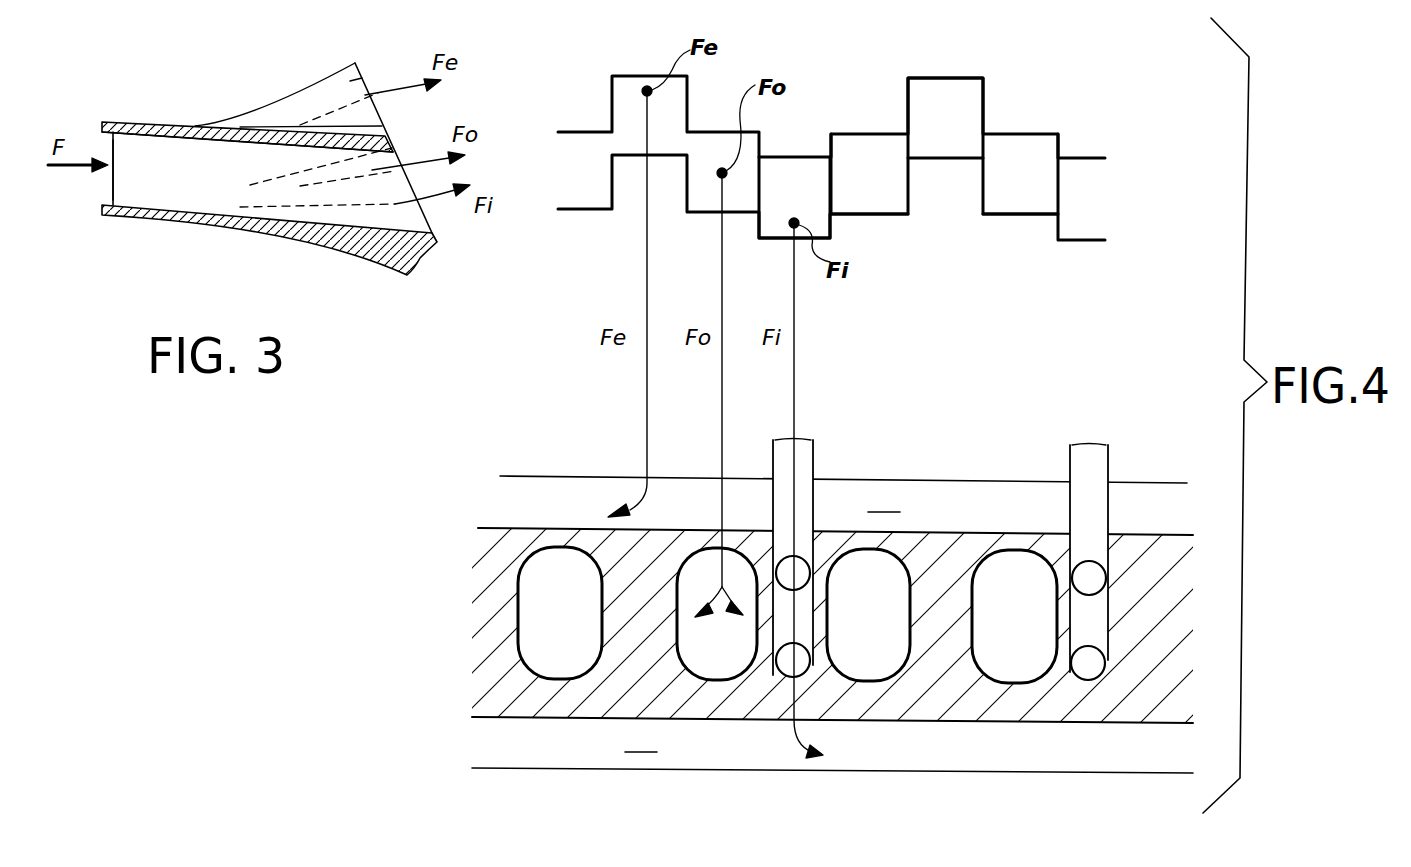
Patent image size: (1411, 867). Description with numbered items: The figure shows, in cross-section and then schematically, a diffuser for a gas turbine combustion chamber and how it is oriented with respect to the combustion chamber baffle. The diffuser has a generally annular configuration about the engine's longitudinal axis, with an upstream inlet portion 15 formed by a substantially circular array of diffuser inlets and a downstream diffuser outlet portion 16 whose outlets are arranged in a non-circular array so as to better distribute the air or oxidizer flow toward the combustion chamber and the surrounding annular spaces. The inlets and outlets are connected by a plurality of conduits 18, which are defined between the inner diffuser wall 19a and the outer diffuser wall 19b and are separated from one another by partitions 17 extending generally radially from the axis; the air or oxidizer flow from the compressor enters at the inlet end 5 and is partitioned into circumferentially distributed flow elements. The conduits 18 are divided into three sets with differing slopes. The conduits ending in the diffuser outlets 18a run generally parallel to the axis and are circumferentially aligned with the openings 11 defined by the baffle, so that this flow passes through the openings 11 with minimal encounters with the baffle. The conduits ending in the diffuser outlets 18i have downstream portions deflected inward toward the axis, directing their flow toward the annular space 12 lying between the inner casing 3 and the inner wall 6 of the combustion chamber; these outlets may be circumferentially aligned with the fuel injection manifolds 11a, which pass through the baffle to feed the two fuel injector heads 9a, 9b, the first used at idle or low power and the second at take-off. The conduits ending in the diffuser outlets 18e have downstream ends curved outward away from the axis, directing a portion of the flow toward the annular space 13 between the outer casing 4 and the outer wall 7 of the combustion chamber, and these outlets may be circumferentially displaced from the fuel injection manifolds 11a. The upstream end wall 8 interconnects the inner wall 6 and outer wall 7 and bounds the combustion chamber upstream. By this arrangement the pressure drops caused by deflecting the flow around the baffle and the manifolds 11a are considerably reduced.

In FIG. 4, the inner casing 3 is at (938, 771).
In FIG. 4, the outer casing 4 is at (932, 479).
In FIG. 3, the nozzle inlet 5 is at (102, 145).
In FIG. 4, the inner wall 6 is at (1025, 721).
In FIG. 4, the outer wall 7 is at (970, 532).
In FIG. 4, the upstream end wall 8 is at (718, 690).
In FIG. 4, the fuel injector head 9a is at (1088, 668).
In FIG. 4, the fuel injector head 9b is at (1090, 583).
In FIG. 4, the openings 11 is at (693, 647).
In FIG. 4, the fuel injection manifolds 11a is at (1097, 505).
In FIG. 4, the annular space 12 is at (641, 740).
In FIG. 4, the annular space 13 is at (884, 500).
In FIG. 3, the inlet portion 15 is at (139, 118).
In FIG. 3, the diffuser outlet portion 16 is at (262, 92).
In FIG. 3, the partitions 17 is at (120, 187).
In FIG. 4, the partitions 17 is at (987, 115).
In FIG. 3, the conduits 18 is at (272, 217).
In FIG. 3, the diffuser outlets 18a is at (363, 128).
In FIG. 4, the diffuser outlets 18a is at (1002, 192).
In FIG. 3, the diffuser outlets 18e is at (362, 73).
In FIG. 4, the diffuser outlets 18e is at (945, 87).
In FIG. 3, the diffuser outlets 18i is at (410, 220).
In FIG. 4, the diffuser outlets 18i is at (795, 155).
In FIG. 3, the inner diffuser wall 19a is at (333, 240).
In FIG. 3, the outer diffuser wall 19b is at (230, 137).